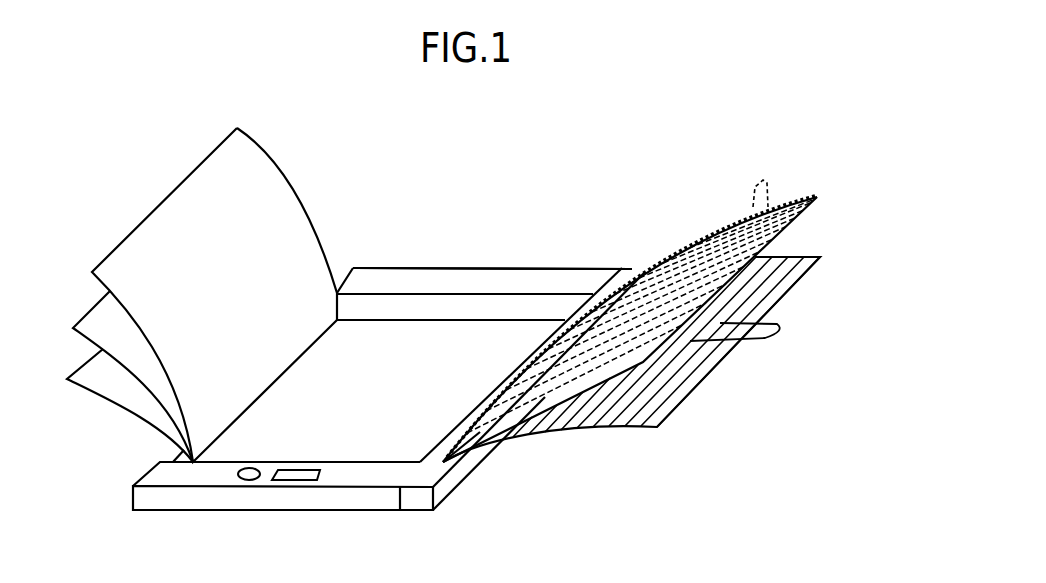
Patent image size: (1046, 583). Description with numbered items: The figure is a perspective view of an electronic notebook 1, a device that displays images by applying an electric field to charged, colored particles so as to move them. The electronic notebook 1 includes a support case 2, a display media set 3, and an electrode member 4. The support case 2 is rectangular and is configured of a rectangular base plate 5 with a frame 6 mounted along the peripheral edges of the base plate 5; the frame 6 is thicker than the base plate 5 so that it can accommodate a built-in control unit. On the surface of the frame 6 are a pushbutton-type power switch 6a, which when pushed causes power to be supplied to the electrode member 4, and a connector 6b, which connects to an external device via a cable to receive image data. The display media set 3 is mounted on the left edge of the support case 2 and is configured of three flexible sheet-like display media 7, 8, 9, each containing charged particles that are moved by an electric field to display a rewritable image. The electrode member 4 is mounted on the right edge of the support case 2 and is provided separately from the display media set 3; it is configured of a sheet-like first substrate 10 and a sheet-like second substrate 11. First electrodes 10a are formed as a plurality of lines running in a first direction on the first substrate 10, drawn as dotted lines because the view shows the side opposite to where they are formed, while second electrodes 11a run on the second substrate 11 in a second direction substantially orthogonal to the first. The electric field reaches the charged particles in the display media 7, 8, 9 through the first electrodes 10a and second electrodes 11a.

The electronic notebook 1 is at (651, 135).
The support case 2 is at (509, 228).
The display media set 3 is at (98, 209).
The electrode member 4 is at (860, 200).
The base plate 5 is at (418, 333).
The frame 6 is at (489, 282).
The power switch 6a is at (296, 468).
The connector 6b is at (248, 468).
The display medium 7 is at (120, 274).
The display medium 8 is at (85, 321).
The display medium 9 is at (73, 374).
The first substrate 10 is at (802, 208).
The first electrodes 10a is at (764, 184).
The second substrate 11 is at (813, 257).
The second electrodes 11a is at (775, 328).